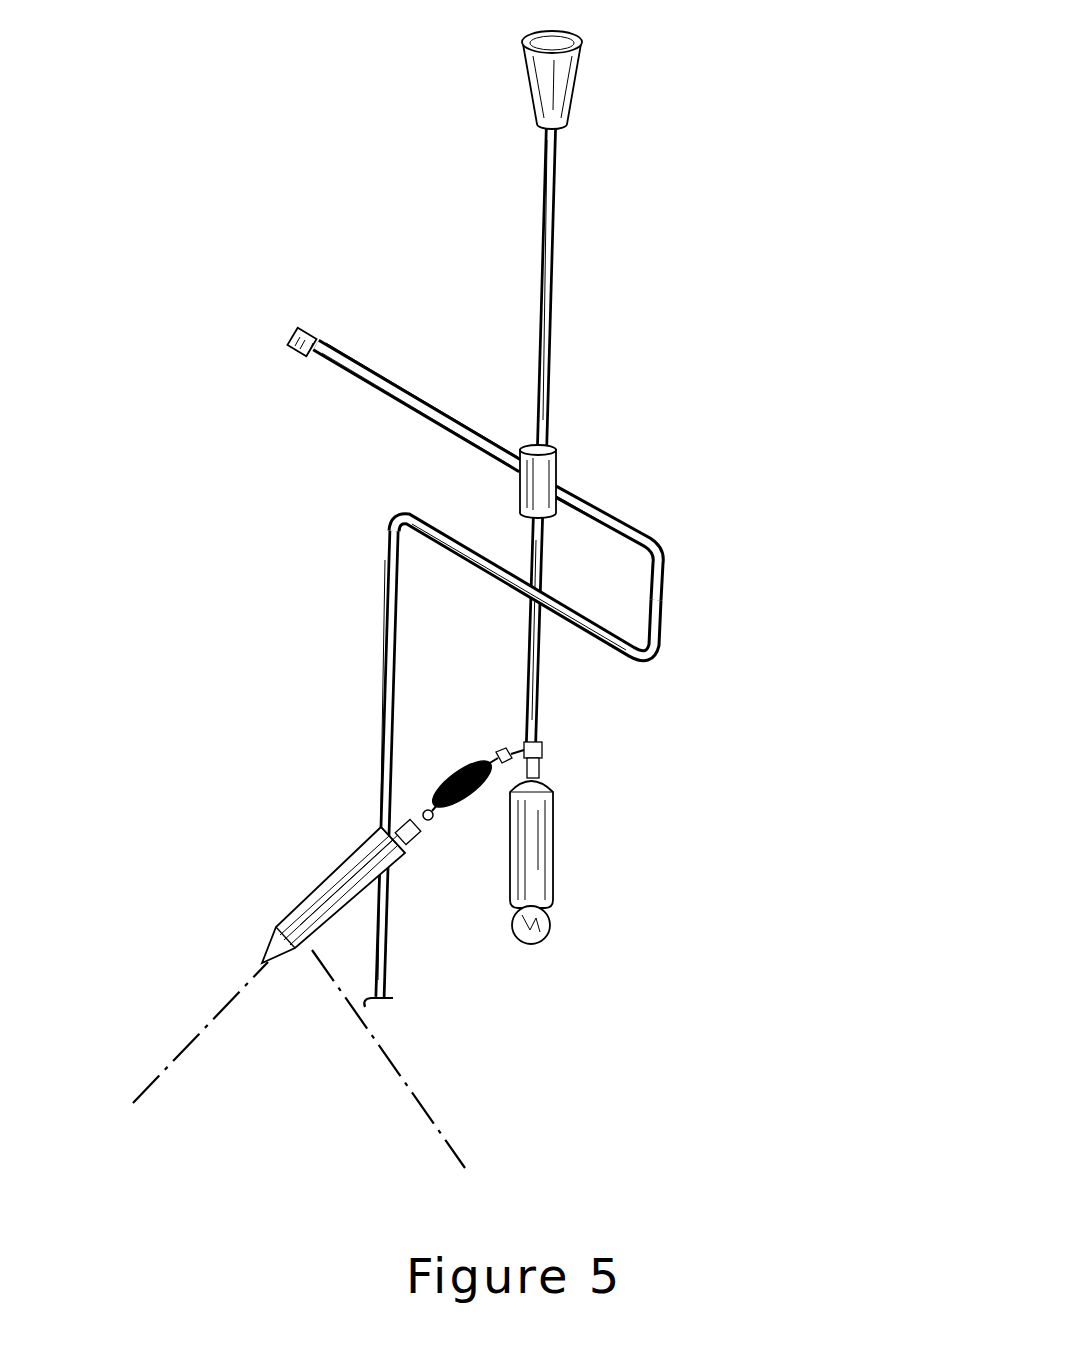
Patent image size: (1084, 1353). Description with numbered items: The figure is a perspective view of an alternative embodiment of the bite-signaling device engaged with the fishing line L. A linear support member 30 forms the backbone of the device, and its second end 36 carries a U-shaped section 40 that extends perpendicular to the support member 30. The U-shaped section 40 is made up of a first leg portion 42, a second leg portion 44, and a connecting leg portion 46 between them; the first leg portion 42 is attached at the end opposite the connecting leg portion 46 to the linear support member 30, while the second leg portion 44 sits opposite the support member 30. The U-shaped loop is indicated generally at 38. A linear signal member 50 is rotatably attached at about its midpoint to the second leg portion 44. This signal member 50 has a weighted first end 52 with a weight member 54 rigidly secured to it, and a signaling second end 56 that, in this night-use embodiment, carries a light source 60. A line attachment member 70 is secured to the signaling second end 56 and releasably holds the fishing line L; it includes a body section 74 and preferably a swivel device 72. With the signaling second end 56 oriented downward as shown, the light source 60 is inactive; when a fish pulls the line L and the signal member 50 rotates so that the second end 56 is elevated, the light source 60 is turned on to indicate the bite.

The linear support member 30 is at (390, 617).
The second end 36 is at (290, 333).
The second arm loop 38 is at (705, 546).
The U-shaped section 40 is at (327, 515).
The first leg portion 42 is at (446, 530).
The second leg portion 44 is at (363, 355).
The connecting leg portion 46 is at (663, 605).
The linear signal member 50 is at (556, 445).
The weighted first end 52 is at (560, 150).
The weight member 54 is at (578, 88).
The signaling second end 56 is at (545, 710).
The light source 60 is at (555, 846).
The line attachment member 70 is at (312, 806).
The swivel device 72 is at (455, 770).
The body section 74 is at (300, 895).
The fishing line L is at (160, 1085).